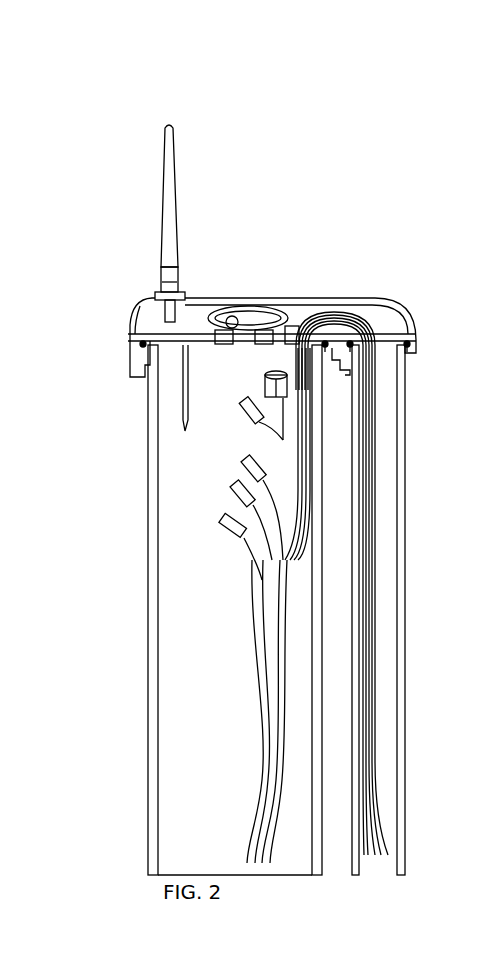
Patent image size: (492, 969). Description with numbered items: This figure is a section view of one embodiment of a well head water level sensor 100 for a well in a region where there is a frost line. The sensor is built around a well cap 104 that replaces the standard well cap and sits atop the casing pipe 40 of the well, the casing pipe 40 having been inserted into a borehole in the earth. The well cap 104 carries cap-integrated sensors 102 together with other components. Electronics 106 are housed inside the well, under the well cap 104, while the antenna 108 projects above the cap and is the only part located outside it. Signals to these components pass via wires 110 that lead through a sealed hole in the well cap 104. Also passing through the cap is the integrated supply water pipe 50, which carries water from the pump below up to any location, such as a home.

The well head water level sensor 100 is at (341, 236).
The antenna 108 is at (176, 152).
The well cap 104 is at (407, 313).
The electronics 106 is at (198, 326).
The cap-integrated sensors 102 is at (222, 360).
The wires 110 is at (373, 661).
The casing pipe 40 is at (152, 672).
The integrated supply water pipe 50 is at (404, 510).